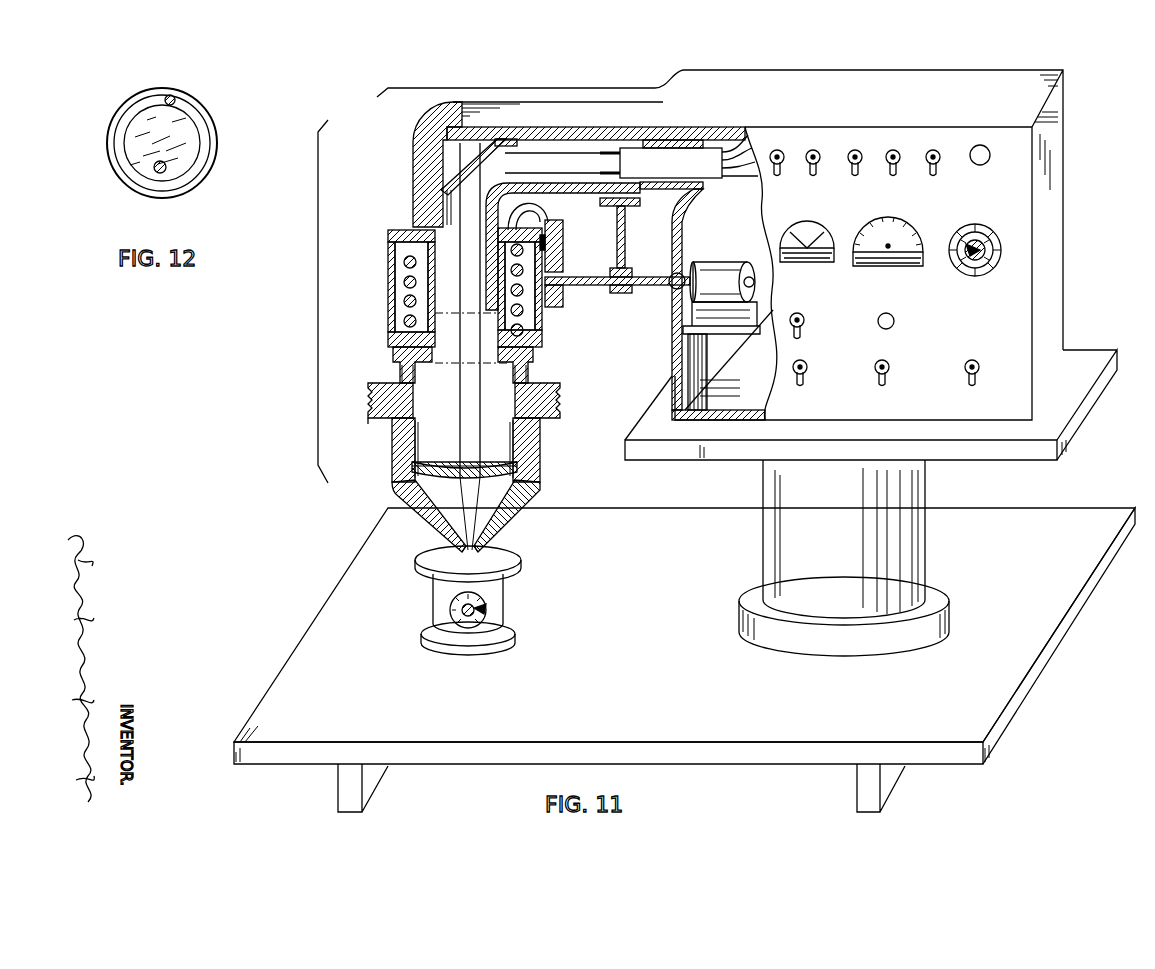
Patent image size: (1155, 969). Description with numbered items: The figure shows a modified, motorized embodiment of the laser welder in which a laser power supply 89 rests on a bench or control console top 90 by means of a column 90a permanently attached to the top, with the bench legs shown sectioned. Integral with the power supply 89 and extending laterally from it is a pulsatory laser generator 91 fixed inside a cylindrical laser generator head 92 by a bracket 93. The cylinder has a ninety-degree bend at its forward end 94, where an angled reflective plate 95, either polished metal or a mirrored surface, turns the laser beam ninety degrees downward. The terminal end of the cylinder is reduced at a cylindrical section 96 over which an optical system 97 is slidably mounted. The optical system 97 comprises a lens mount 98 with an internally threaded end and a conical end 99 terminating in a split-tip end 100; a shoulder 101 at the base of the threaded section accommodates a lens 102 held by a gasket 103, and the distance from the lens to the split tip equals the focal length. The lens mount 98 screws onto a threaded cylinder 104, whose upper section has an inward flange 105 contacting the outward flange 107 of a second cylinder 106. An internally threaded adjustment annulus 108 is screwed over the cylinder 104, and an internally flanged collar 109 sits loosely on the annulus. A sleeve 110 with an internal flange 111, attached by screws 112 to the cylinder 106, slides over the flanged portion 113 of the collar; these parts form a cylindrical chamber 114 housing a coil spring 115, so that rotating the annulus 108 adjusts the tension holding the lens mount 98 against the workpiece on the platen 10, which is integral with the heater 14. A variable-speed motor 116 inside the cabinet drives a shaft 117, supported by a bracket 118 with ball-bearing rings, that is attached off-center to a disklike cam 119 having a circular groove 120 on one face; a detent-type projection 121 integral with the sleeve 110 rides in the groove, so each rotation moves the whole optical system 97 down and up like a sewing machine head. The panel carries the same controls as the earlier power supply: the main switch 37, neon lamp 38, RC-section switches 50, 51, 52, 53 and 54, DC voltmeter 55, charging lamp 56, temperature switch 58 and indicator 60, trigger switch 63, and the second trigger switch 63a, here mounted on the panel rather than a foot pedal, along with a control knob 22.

In FIG. 11, the platen 10 is at (505, 570).
In FIG. 11, the thermostatically controlled variable-temperature heater 14 is at (486, 606).
In FIG. 11, the control knob 22 is at (985, 260).
In FIG. 11, the main switch 37 is at (890, 367).
In FIG. 11, the neon lamp 38 is at (895, 321).
In FIG. 11, the switch 50 is at (779, 150).
In FIG. 11, the switch 51 is at (815, 150).
In FIG. 11, the switch 52 is at (857, 150).
In FIG. 11, the switch 53 is at (895, 150).
In FIG. 11, the switch 54 is at (935, 150).
In FIG. 11, the DC voltmeter 55 is at (906, 222).
In FIG. 11, the neon lamp 56 is at (985, 164).
In FIG. 11, the switch 58 is at (980, 366).
In FIG. 11, the indicator 60 is at (806, 221).
In FIG. 11, the trigger switch 63 is at (808, 367).
In FIG. 11, the second trigger switch 63a is at (805, 320).
In FIG. 11, the laser power supply 89 is at (1063, 262).
In FIG. 11, the bench or control console top 90 is at (1052, 568).
In FIG. 11, the column 90a is at (918, 546).
In FIG. 11, the pulsatory laser generator 91 is at (648, 148).
In FIG. 11, the cylindrical laser generator head 92 is at (537, 88).
In FIG. 11, the bracket 93 is at (698, 195).
In FIG. 11, the forward end 94 is at (435, 128).
In FIG. 11, the reflective plate 95 is at (425, 175).
In FIG. 11, the cylindrical section 96 is at (440, 226).
In FIG. 11, the optical system 97 is at (316, 312).
In FIG. 11, the lens mount 98 is at (392, 466).
In FIG. 11, the conical end 99 is at (432, 532).
In FIG. 11, the split-tip end 100 is at (480, 552).
In FIG. 11, the shoulder 101 is at (532, 500).
In FIG. 11, the lens 102 is at (380, 500).
In FIG. 11, the gasket 103 is at (517, 468).
In FIG. 11, the threaded cylinder 104 is at (540, 442).
In FIG. 11, the flange 105 is at (540, 352).
In FIG. 11, the second cylinder 106 is at (404, 318).
In FIG. 11, the flange 107 is at (400, 372).
In FIG. 11, the adjustment annulus 108 is at (560, 400).
In FIG. 11, the collar 109 is at (533, 372).
In FIG. 11, the sleeve 110 is at (400, 270).
In FIG. 11, the internal flange 111 is at (390, 250).
In FIG. 11, the screws 112 is at (392, 232).
In FIG. 11, the internally flanged portion 113 is at (395, 340).
In FIG. 11, the cylindrical chamber 114 is at (404, 260).
In FIG. 11, the coil spring 115 is at (404, 300).
In FIG. 11, the variable-speed motor 116 is at (718, 262).
In FIG. 12, the shaft 117 is at (162, 173).
In FIG. 11, the shaft 117 is at (640, 290).
In FIG. 11, the bracket 118 is at (627, 240).
In FIG. 12, the disklike cam 119 is at (212, 170).
In FIG. 11, the disklike cam 119 is at (563, 248).
In FIG. 12, the circular groove 120 is at (200, 132).
In FIG. 11, the circular groove 120 is at (563, 298).
In FIG. 12, the detent-type projection 121 is at (178, 98).
In FIG. 11, the detent-type projection 121 is at (532, 213).